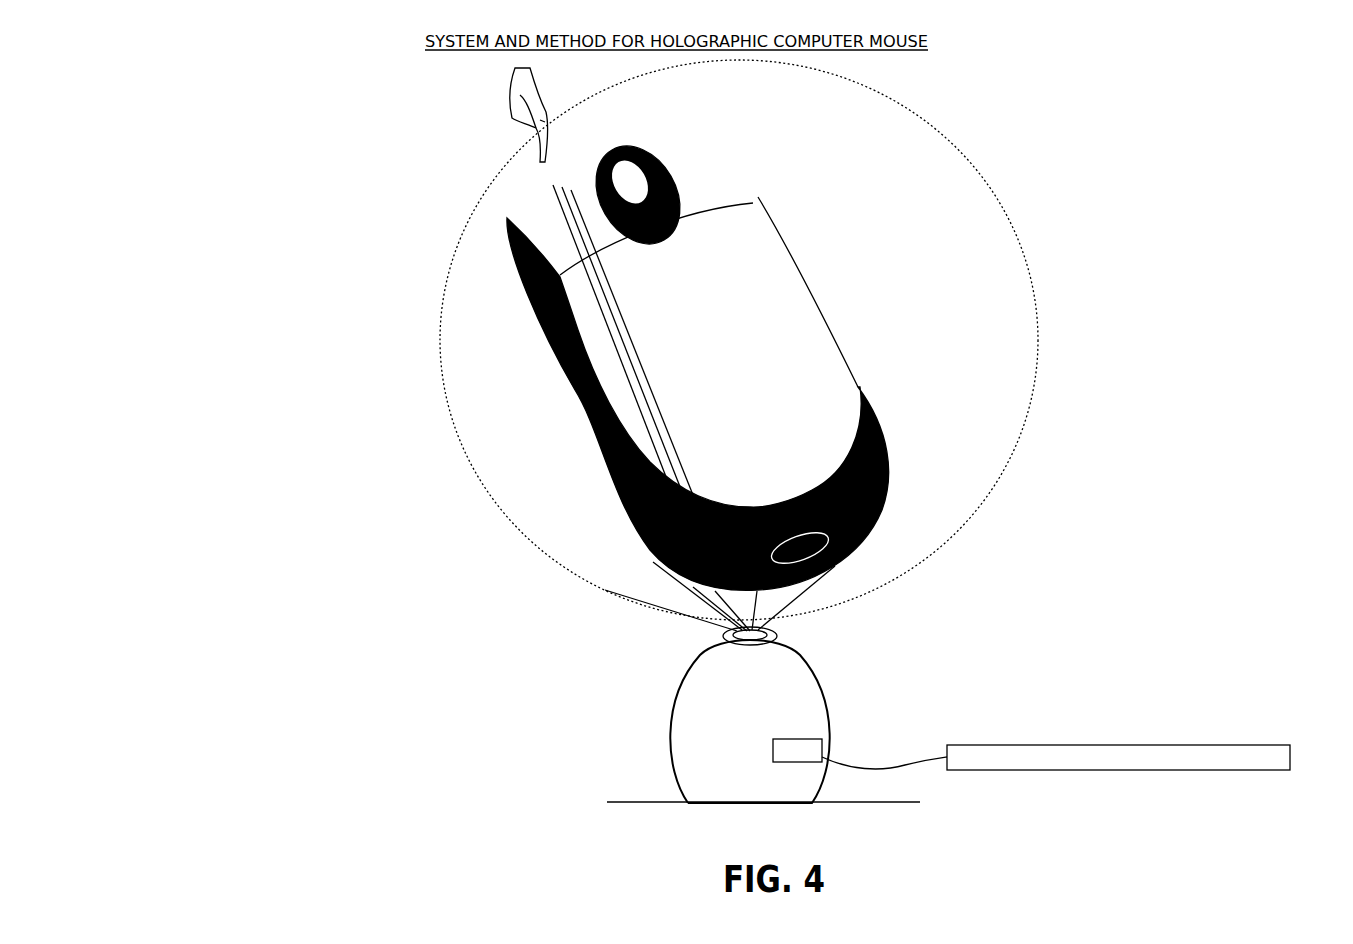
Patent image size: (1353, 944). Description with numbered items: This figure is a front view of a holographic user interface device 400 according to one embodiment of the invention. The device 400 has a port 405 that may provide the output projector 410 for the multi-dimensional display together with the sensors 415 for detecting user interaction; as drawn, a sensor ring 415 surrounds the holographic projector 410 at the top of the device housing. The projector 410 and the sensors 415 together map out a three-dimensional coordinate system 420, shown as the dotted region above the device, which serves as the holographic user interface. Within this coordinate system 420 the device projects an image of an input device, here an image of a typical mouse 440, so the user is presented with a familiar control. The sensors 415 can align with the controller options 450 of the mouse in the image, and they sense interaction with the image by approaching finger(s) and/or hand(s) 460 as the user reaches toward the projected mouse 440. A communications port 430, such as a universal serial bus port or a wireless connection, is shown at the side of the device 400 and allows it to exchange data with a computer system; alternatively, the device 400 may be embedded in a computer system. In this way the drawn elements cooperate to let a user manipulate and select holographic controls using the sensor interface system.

The holographic user interface device 400 is at (940, 608).
The port 405 is at (678, 703).
The holographic projector 410 is at (785, 670).
The sensor ring 415 is at (723, 640).
The 3-D coordinate system 420 is at (905, 165).
The communications port 430 is at (1020, 823).
The image of a mouse 440 is at (797, 291).
The controller options 450 is at (632, 378).
The approaching finger(s) and/or hand(s) 460 is at (538, 155).